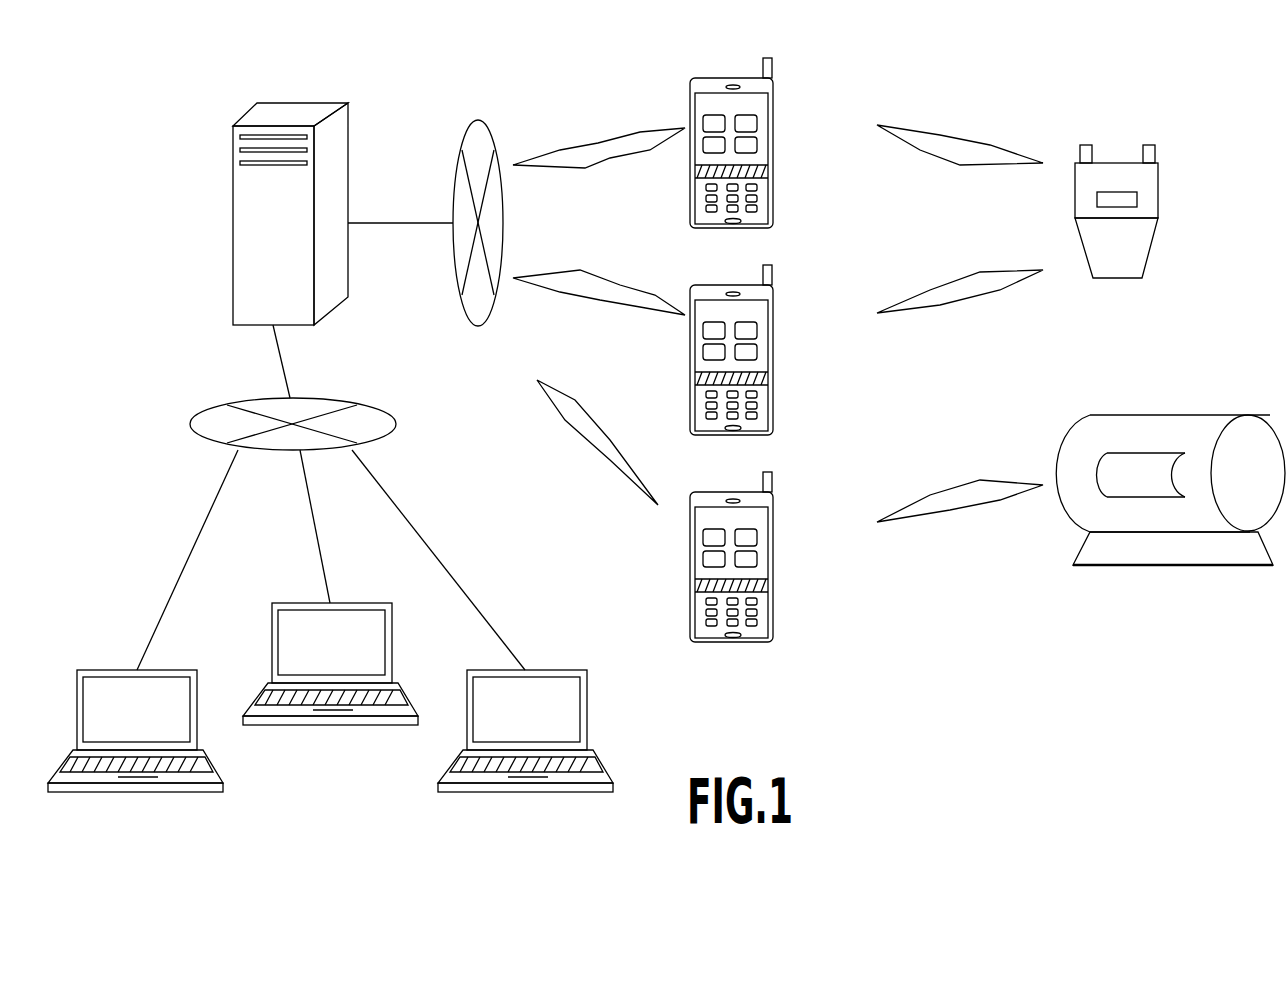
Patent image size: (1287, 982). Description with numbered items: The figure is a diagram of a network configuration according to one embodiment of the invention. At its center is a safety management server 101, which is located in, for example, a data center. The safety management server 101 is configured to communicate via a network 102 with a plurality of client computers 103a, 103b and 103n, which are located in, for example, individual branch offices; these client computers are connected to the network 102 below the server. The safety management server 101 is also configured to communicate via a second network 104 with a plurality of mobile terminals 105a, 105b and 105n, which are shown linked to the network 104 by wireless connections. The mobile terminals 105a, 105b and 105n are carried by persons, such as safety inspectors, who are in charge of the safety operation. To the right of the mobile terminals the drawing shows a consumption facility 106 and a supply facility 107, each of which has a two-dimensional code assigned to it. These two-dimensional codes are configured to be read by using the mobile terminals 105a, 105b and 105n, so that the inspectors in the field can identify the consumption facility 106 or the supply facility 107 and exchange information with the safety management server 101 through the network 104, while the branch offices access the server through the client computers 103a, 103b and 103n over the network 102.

The safety management server 101 is at (308, 101).
The network 102 is at (397, 420).
The client computer 103a is at (167, 670).
The client computer 103b is at (357, 600).
The client computer 103n is at (553, 670).
The network 104 is at (478, 120).
The mobile terminal 105a is at (777, 145).
The mobile terminal 105b is at (777, 352).
The mobile terminal 105n is at (777, 559).
The consumption facility 106 is at (1160, 190).
The supply facility 107 is at (1170, 414).